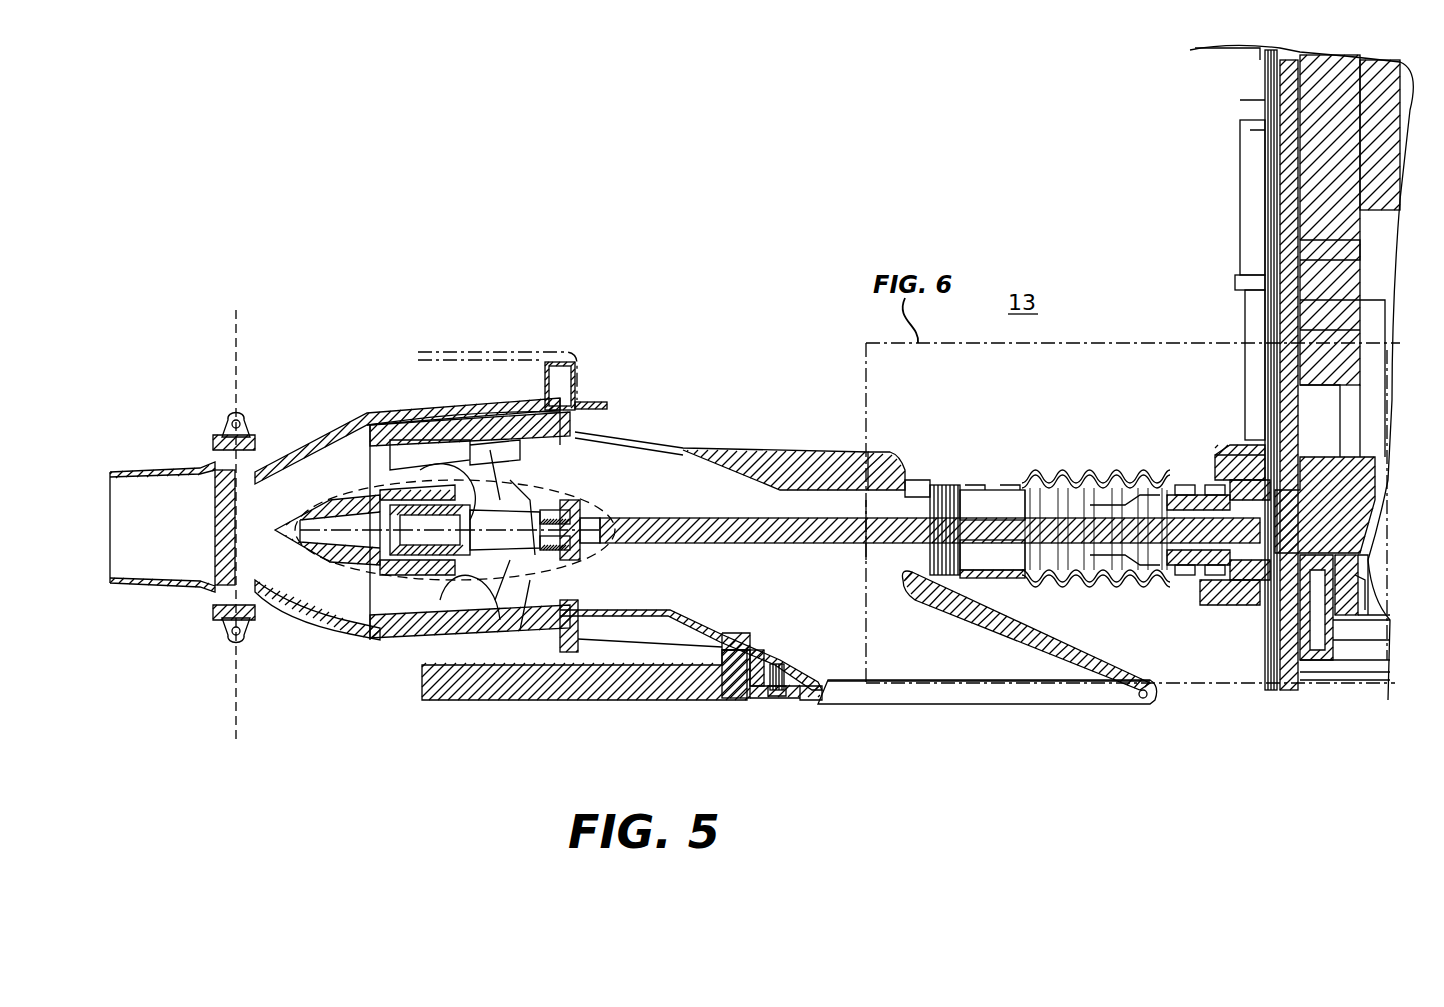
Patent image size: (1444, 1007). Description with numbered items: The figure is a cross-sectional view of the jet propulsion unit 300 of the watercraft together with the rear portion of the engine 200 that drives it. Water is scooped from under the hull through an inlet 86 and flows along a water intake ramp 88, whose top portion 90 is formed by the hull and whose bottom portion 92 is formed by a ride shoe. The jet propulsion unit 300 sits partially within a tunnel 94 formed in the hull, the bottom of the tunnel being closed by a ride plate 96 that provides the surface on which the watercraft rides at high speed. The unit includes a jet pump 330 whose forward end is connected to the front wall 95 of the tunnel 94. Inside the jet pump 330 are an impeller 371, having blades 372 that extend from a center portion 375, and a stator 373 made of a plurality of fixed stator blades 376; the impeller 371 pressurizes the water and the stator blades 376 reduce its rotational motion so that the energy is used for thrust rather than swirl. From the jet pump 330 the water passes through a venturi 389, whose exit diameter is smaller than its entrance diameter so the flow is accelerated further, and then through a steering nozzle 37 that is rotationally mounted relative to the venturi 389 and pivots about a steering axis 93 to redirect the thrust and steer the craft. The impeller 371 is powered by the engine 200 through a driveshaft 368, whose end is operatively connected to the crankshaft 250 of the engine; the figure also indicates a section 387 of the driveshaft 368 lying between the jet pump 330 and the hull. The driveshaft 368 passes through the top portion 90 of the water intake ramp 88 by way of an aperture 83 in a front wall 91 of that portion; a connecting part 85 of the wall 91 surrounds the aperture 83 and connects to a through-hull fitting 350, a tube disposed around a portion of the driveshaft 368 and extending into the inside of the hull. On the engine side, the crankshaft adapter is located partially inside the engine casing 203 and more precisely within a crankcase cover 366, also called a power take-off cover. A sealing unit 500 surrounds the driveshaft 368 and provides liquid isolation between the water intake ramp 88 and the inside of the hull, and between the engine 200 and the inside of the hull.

The steering nozzle 37 is at (152, 590).
The aperture 83 is at (852, 556).
The connecting part 85 is at (950, 487).
The inlet 86 is at (1032, 702).
The water intake ramp 88 is at (888, 665).
The top portion of the water intake ramp 90 is at (940, 610).
The front wall 91 is at (828, 458).
The bottom portion of the water intake ramp 92 is at (775, 668).
The steering axis 93 is at (230, 353).
The tunnel 94 is at (425, 352).
The front wall of the tunnel 95 is at (578, 378).
The ride plate 96 is at (662, 703).
The engine 200 is at (1240, 75).
The engine casing 203 is at (1245, 455).
The crankshaft 250 is at (1268, 560).
The jet propulsion unit 300 is at (486, 426).
The jet pump 330 is at (519, 350).
The through-hull fitting 350 is at (982, 578).
The crankcase cover 366 is at (1200, 495).
The driveshaft 368 is at (722, 540).
The impeller 371 is at (490, 395).
The impeller blades 372 is at (492, 560).
The stator 373 is at (355, 565).
The center portion 375 is at (546, 600).
The stator blades 376 is at (447, 555).
The outlet duct 387 is at (688, 510).
The venturi 389 is at (292, 612).
The sealing unit 500 is at (1030, 450).